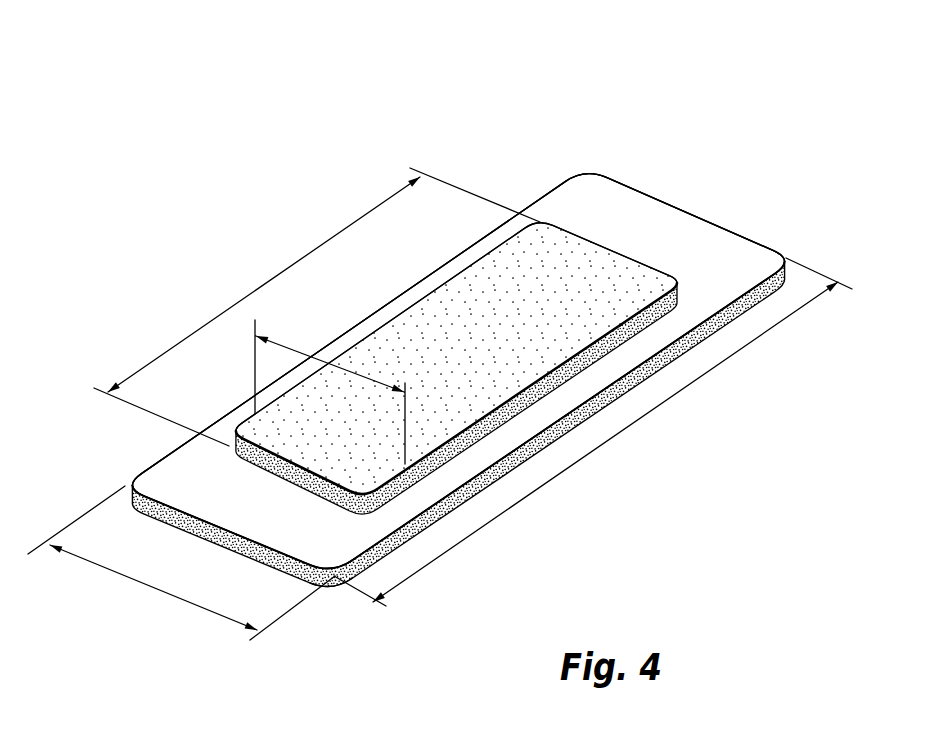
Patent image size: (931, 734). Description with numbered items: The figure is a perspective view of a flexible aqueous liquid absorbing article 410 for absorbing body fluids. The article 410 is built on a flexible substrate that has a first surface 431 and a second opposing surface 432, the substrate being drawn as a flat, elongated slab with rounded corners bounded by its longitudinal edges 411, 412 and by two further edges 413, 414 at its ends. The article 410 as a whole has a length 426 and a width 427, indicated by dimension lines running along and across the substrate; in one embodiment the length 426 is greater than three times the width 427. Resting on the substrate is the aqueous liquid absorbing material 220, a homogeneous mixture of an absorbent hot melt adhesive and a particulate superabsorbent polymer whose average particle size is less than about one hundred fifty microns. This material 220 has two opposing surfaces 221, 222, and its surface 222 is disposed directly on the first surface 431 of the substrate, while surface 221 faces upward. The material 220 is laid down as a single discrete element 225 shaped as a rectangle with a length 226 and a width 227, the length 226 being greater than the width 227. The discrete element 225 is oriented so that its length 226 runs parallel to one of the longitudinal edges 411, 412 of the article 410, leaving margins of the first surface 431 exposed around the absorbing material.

The flexible aqueous liquid absorbing article 410 is at (256, 93).
The aqueous liquid absorbing material 220 is at (469, 362).
The surface of aqueous liquid absorbing material 221 is at (443, 303).
The surface of aqueous liquid absorbing material 222 is at (329, 500).
The discrete element 225 is at (588, 239).
The length of discrete element 226 is at (264, 283).
The width of discrete element 227 is at (320, 358).
The longitudinal edge 411 is at (540, 445).
The longitudinal edge 412 is at (220, 418).
The second side edge of substrate 413 is at (225, 552).
The rear edge of substrate 414 is at (638, 188).
The length of article 426 is at (630, 424).
The width of article 427 is at (143, 584).
The first surface 431 is at (683, 230).
The second opposing surface 432 is at (343, 587).